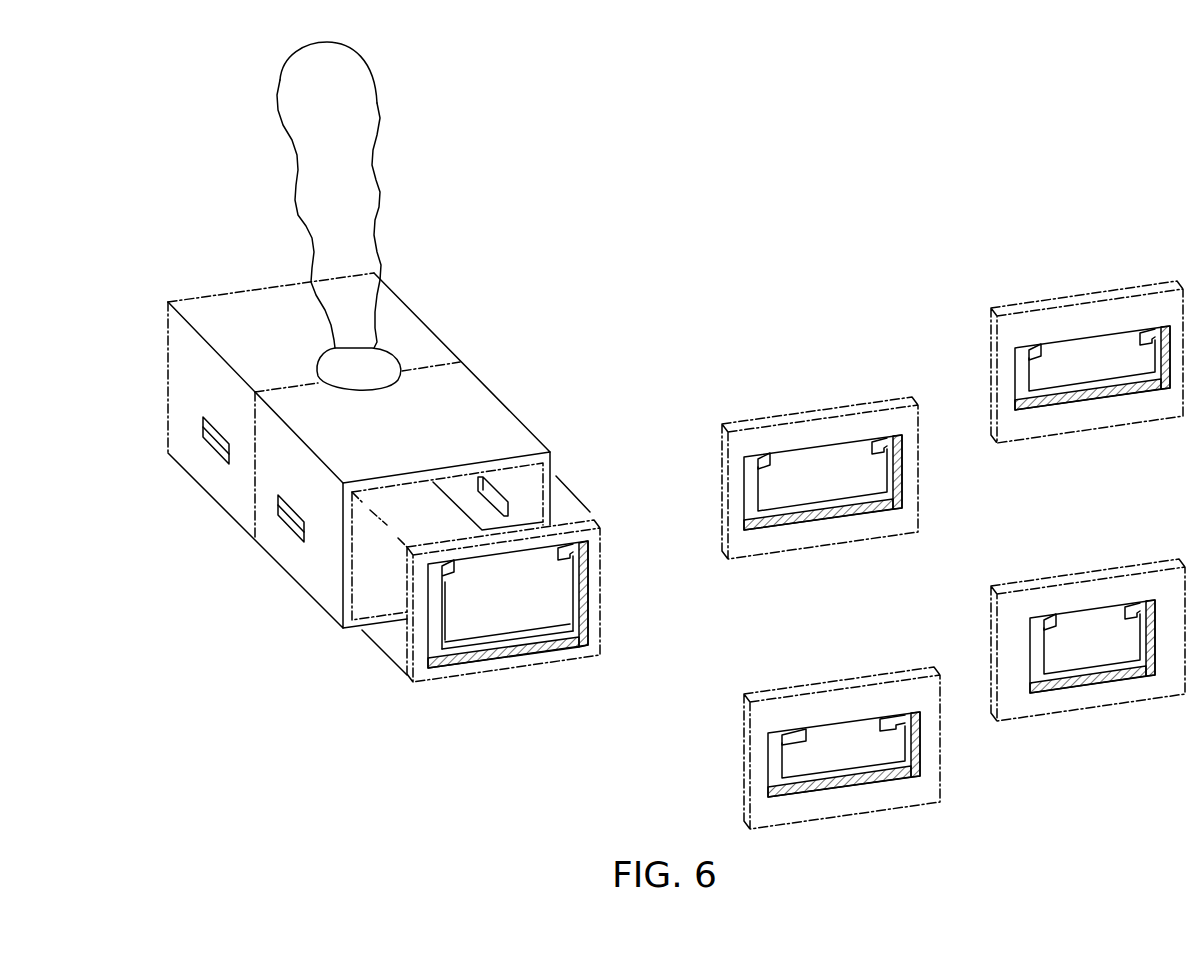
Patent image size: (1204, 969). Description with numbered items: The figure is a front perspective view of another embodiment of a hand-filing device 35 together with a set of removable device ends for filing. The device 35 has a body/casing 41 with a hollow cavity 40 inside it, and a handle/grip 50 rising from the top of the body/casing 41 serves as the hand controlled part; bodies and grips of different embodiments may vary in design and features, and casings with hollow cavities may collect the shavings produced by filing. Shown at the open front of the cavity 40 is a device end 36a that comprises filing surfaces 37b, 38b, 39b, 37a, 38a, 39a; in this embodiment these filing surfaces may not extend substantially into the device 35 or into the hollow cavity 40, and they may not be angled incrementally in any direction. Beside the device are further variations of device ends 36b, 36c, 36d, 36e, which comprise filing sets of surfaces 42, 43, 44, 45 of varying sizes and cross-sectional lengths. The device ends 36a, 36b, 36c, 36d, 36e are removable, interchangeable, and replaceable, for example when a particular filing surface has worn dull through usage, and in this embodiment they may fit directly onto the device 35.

The hand-filing device 35 is at (526, 362).
The device end 36a is at (586, 530).
The device end 36b is at (807, 428).
The device end 36c is at (1082, 316).
The device end 36d is at (847, 705).
The device end 36e is at (1078, 612).
The filing surface 37a is at (590, 593).
The filing surface 37b is at (568, 596).
The filing surface 38a is at (503, 657).
The filing surface 38b is at (517, 636).
The filing surface 39a is at (450, 626).
The filing surface 39b is at (445, 632).
The hollow cavity 40 is at (432, 518).
The body/casing 41 is at (278, 538).
The filing set of surfaces 42 is at (807, 517).
The filing set of surfaces 43 is at (1075, 398).
The filing set of surfaces 44 is at (838, 783).
The filing set of surfaces 45 is at (1107, 680).
The handle/grip 50 is at (348, 84).